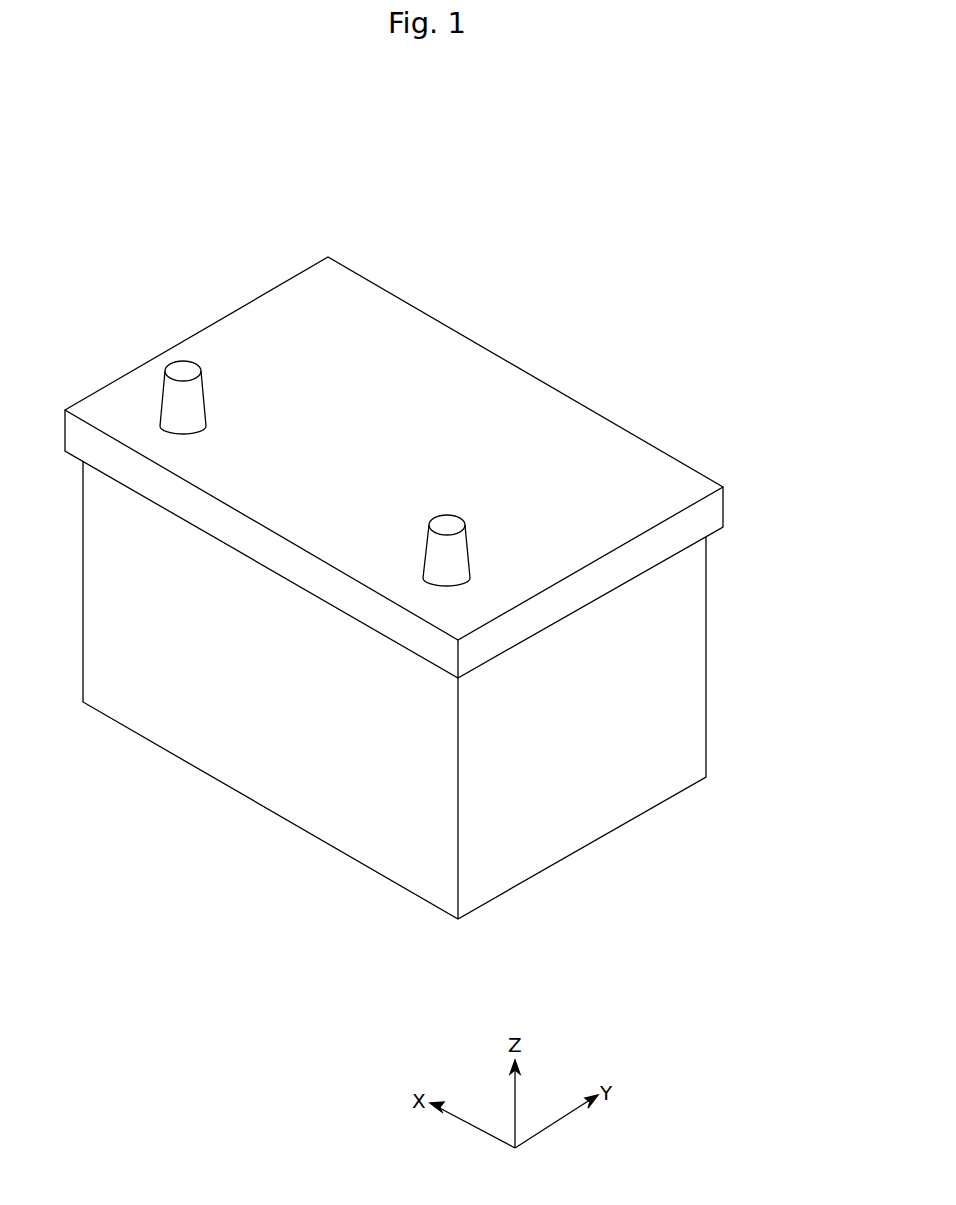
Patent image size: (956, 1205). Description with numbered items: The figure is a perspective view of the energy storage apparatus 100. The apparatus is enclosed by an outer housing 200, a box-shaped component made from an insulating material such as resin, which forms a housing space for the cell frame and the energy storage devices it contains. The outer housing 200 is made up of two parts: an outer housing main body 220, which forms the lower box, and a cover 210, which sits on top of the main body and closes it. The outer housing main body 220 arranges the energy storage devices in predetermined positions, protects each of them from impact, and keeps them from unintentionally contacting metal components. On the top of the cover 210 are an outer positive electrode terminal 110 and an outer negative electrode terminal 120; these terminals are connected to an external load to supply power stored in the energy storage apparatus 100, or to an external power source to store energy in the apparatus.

The energy storage apparatus 100 is at (568, 346).
The outer positive electrode terminal 110 is at (447, 522).
The outer negative electrode terminal 120 is at (183, 368).
The outer housing 200 is at (807, 413).
The cover 210 is at (702, 488).
The outer housing main body 220 is at (697, 670).